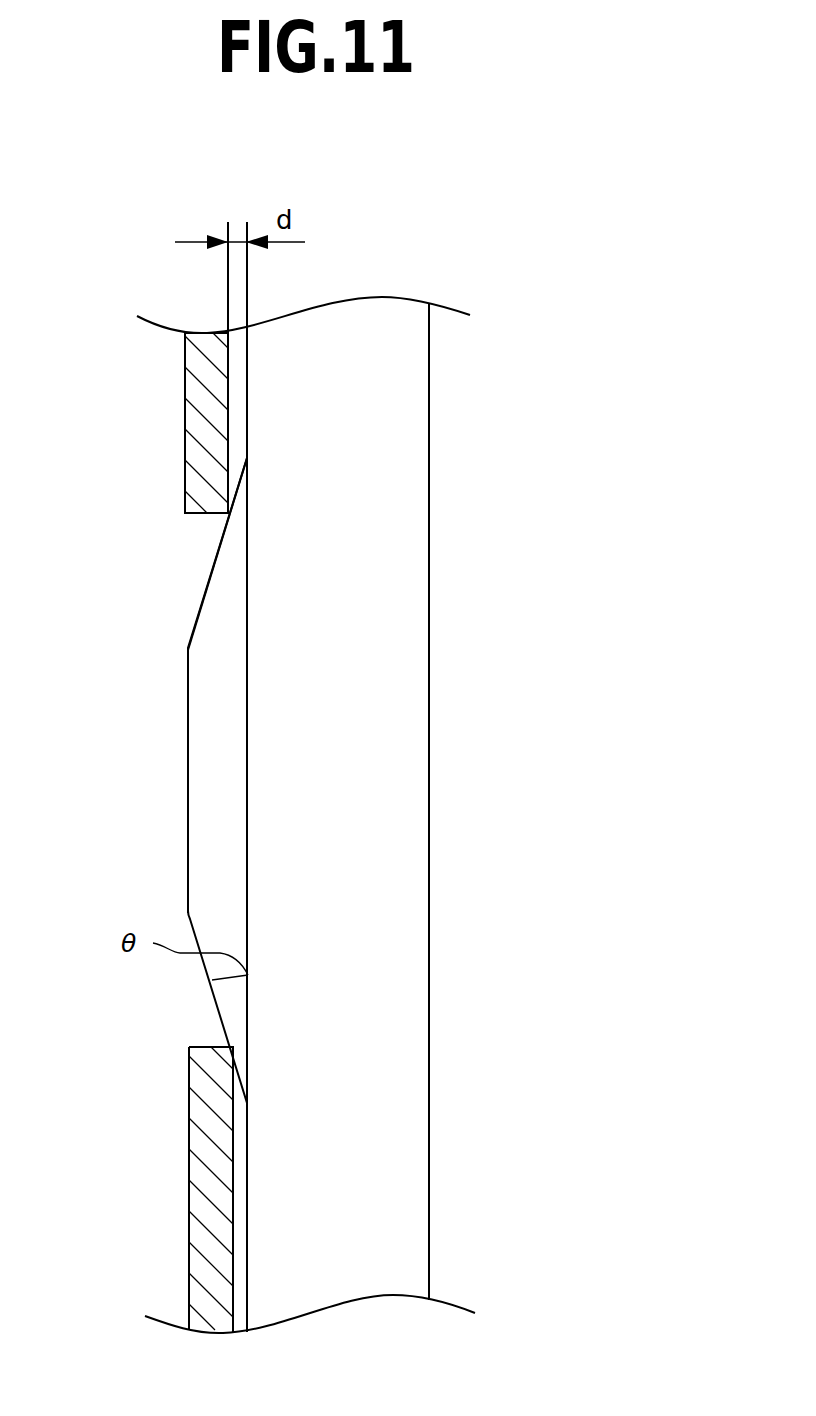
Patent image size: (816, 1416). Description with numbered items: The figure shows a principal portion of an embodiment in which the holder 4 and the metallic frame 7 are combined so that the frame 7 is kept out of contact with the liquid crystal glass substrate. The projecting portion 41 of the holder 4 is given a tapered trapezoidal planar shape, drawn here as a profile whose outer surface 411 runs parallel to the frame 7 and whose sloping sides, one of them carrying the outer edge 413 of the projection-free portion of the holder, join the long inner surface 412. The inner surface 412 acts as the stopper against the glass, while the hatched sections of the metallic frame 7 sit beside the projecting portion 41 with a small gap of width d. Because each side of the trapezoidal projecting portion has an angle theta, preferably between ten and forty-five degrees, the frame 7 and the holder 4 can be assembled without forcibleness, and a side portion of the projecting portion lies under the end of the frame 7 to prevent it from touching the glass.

The holder 4 is at (369, 318).
The frame 7 is at (197, 394).
The projecting portion 41 is at (203, 714).
The outer surface of the projecting portion 411 is at (188, 822).
The inner surface of the projecting portion 412 is at (247, 621).
The outer edge of the projection-free portion 413 is at (203, 594).